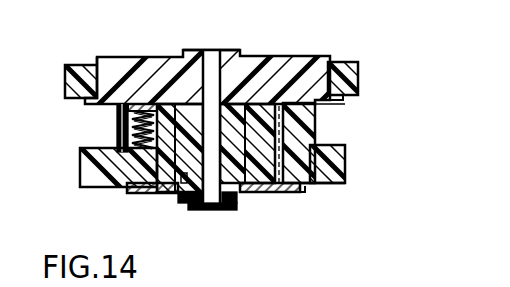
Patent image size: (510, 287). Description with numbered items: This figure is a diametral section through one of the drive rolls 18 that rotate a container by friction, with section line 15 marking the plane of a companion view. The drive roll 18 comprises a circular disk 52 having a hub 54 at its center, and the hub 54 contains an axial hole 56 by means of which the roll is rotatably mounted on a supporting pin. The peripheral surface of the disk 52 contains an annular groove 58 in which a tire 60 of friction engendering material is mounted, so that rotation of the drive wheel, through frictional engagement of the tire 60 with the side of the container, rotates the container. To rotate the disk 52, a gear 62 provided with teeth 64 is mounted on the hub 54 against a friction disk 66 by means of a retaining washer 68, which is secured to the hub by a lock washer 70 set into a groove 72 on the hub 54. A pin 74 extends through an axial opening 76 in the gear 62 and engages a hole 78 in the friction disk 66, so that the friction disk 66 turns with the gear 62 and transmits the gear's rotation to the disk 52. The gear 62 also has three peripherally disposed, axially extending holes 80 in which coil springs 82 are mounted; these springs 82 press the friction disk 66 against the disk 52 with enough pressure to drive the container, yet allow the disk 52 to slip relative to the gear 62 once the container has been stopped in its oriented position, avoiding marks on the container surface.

The drive roll 18 is at (257, 43).
The circular disk 52 is at (125, 64).
The hub 54 is at (162, 195).
The axial hole 56 is at (212, 55).
The annular groove 58 is at (100, 62).
The tire 60 is at (68, 74).
The gear 62 is at (326, 186).
The teeth 64 is at (346, 170).
The friction disk 66 is at (330, 113).
The retaining washer 68 is at (130, 195).
The lock washer 70 is at (240, 200).
The groove 72 is at (233, 207).
The pin 74 is at (306, 130).
The axial opening 76 is at (282, 190).
The hole 78 is at (312, 66).
The axially extending holes 80 is at (118, 127).
The coil springs 82 is at (125, 140).
The section line 15- 15 is at (32, 128).